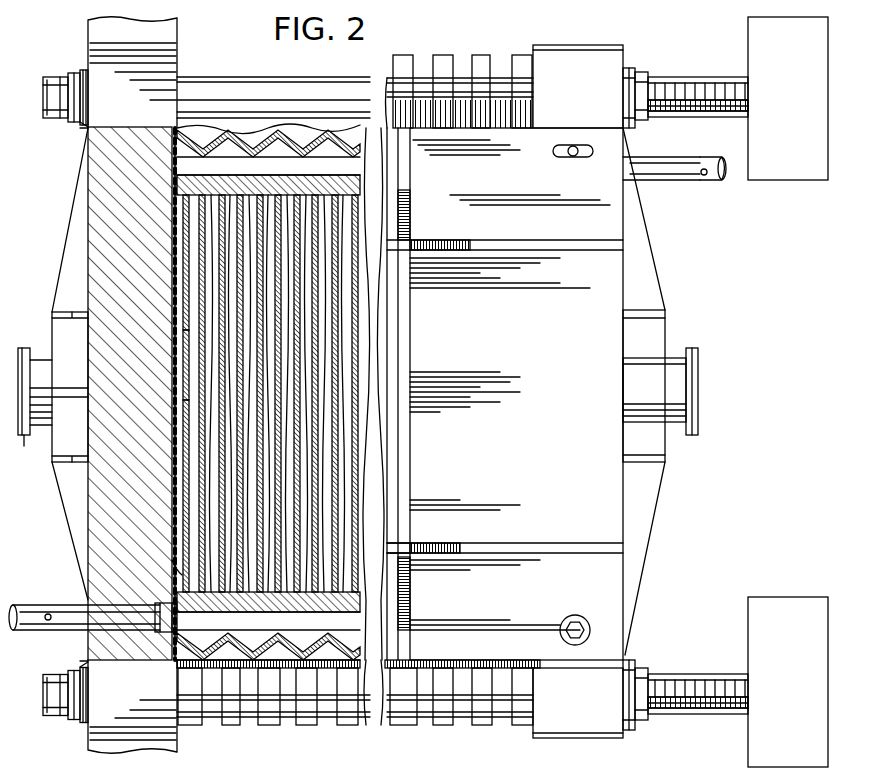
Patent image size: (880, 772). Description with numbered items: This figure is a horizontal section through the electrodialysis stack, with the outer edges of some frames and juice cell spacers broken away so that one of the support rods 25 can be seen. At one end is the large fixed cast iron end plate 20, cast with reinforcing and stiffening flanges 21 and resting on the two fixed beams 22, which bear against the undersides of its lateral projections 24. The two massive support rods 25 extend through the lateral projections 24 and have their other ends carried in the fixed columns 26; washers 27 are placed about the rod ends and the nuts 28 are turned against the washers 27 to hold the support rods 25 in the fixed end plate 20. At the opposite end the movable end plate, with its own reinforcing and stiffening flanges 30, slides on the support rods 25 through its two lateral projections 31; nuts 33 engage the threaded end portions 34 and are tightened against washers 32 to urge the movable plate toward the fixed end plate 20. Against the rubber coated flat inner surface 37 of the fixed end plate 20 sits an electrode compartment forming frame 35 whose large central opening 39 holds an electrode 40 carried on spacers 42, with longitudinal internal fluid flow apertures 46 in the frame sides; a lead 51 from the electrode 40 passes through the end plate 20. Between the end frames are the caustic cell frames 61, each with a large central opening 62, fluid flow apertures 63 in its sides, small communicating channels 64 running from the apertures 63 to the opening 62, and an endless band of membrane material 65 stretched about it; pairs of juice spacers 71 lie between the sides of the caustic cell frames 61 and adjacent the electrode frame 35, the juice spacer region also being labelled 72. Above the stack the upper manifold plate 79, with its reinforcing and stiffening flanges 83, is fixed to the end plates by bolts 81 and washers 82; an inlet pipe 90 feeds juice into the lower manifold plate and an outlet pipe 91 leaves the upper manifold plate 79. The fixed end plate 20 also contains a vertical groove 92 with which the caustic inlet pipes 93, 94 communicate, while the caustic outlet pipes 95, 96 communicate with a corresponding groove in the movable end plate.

The fixed end plate 20 is at (88, 210).
The reinforcing and stiffening flanges 21 is at (58, 272).
The fixed beams 22 is at (178, 30).
The lateral projections 24 is at (165, 65).
The support rods 25 is at (318, 78).
The fixed columns 26 is at (790, 182).
The washers 27 is at (84, 128).
The nuts 28 is at (80, 76).
The reinforcing and stiffening flanges 30 is at (656, 500).
The lateral projections 31 is at (570, 45).
The washers 32 is at (631, 70).
The nuts 33 is at (648, 75).
The threaded end portions 34 is at (700, 80).
The electrode compartment forming frame 35 is at (172, 570).
The rubber coated flat inner surface 37 is at (172, 255).
The large central openings 39 is at (185, 343).
The electrode 40 is at (185, 412).
The spacers 42 is at (178, 200).
The longitudinal internal fluid flow apertures 46 is at (185, 165).
The lead 51 is at (68, 388).
The caustic cell frames 61 is at (232, 303).
The large central opening 62 is at (372, 232).
The fluid flow apertures 63 is at (362, 165).
The communicating channels 64 is at (372, 200).
The endless band of membrane material 65 is at (340, 303).
The juice spacers 71 is at (208, 135).
The tube sheet layer 72 is at (287, 135).
The upper manifold plate 79 is at (608, 282).
The bolts 81 is at (573, 158).
The washers 82 is at (560, 622).
The reinforcing and stiffening flanges 83 is at (534, 543).
The inlet pipe 90 is at (24, 446).
The outlet pipe 91 is at (700, 388).
The vertical groove 92 is at (158, 608).
The caustic inlet pipe 93 is at (62, 604).
The caustic inlet pipe 94 is at (25, 604).
The caustic outlet pipe 95 is at (668, 158).
The caustic outlet pipe 96 is at (715, 158).